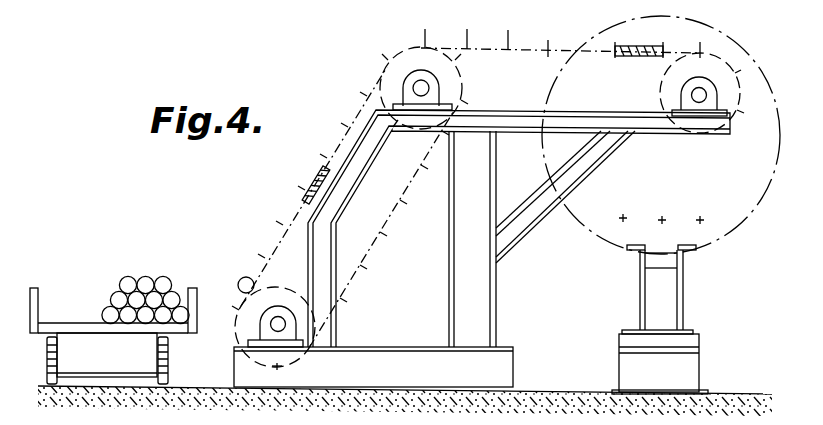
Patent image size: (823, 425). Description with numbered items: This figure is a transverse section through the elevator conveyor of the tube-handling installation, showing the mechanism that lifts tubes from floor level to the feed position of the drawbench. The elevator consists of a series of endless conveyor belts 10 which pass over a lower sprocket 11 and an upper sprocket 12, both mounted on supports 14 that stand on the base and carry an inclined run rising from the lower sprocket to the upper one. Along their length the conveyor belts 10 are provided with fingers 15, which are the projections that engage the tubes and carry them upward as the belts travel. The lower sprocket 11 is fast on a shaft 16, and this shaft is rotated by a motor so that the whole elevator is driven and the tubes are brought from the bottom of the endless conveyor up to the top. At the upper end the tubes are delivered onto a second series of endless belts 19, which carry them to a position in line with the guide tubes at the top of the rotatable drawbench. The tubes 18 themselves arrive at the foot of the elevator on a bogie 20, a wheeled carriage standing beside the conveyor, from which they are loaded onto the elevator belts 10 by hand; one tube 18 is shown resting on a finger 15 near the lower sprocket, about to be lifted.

The endless conveyor belt 10 is at (308, 190).
The sprocket 11 is at (259, 287).
The sprocket 12 is at (410, 50).
The support 14 is at (363, 162).
The finger 15 is at (372, 92).
The shaft 16 is at (270, 323).
The tube 18 is at (178, 279).
The endless belt 19 is at (478, 48).
The bogie 20 is at (113, 336).